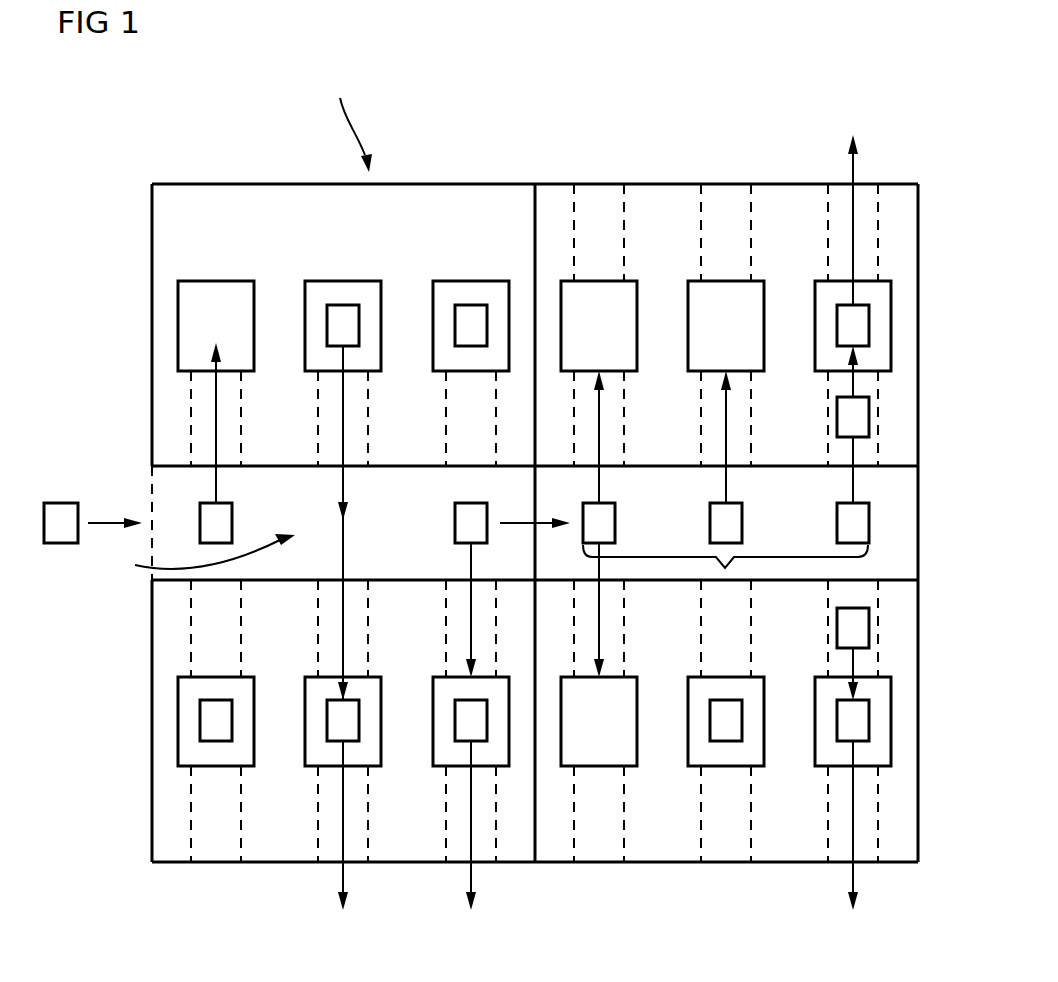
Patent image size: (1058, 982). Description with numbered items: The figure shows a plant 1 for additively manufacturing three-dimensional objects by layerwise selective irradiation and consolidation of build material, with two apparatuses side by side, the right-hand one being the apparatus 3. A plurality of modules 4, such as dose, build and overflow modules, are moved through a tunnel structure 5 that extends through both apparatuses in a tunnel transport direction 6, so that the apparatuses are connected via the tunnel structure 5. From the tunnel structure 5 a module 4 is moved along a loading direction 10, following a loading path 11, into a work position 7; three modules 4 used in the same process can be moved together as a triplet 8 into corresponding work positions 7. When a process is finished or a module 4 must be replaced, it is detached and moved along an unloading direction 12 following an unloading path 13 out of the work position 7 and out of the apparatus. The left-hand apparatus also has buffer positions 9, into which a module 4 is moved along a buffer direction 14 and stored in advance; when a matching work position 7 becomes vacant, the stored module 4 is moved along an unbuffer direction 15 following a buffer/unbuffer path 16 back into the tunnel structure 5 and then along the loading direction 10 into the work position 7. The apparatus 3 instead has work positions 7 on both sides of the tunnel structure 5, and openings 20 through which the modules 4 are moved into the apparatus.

The plant 1 is at (840, 82).
The apparatus 3 is at (692, 148).
The module 4 is at (63, 503).
The tunnel structure 5 is at (204, 558).
The tunnel transport direction 6 is at (530, 522).
The work position 7 is at (602, 281).
The triplet 8 is at (727, 568).
The buffer position 9 is at (178, 330).
The loading direction 10 is at (343, 555).
The loading path 11 is at (572, 417).
The unloading direction 12 is at (476, 878).
The unloading path 13 is at (190, 813).
The buffer direction 14 is at (215, 428).
The unbuffer direction 15 is at (342, 410).
The buffer/unbuffer path 16 is at (370, 432).
The opening 20 is at (737, 863).